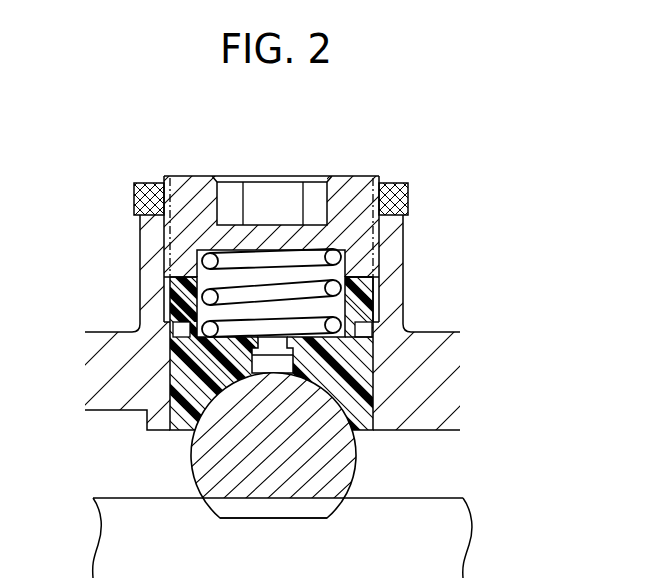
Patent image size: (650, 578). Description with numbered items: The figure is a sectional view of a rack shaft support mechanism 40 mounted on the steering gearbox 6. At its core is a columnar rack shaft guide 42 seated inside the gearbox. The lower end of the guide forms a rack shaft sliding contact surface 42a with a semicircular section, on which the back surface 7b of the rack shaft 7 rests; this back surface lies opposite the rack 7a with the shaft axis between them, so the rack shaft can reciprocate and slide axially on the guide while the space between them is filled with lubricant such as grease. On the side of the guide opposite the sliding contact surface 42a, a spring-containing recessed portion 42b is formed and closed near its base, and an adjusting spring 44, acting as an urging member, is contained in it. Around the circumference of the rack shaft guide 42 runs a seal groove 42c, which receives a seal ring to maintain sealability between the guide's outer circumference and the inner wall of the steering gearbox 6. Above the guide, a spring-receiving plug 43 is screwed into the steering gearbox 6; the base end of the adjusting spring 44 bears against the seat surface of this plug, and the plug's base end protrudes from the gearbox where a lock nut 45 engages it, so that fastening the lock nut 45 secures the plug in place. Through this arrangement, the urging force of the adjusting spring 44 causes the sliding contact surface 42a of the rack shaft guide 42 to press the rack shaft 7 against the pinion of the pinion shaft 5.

The rack shaft support mechanism 40 is at (325, 289).
The spring-receiving plug 43 is at (192, 186).
The lock nut 45 is at (134, 200).
The adjusting spring 44 is at (198, 268).
The rack shaft guide 42 is at (180, 410).
The rack shaft sliding contact surface 42a is at (373, 328).
The spring-containing recessed portion 42b is at (338, 272).
The seal groove 42c is at (376, 296).
The rack shaft 7 is at (357, 460).
The rack 7a is at (273, 518).
The back surface 7b is at (182, 348).
The steering gearbox 6 is at (430, 430).
The pinion shaft 5 is at (148, 498).